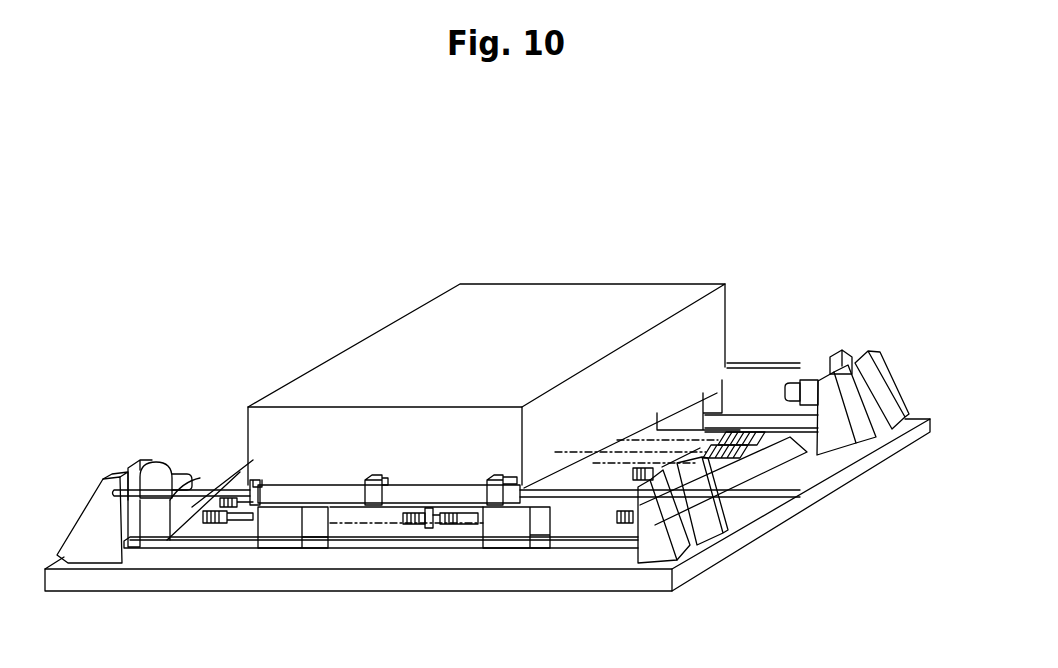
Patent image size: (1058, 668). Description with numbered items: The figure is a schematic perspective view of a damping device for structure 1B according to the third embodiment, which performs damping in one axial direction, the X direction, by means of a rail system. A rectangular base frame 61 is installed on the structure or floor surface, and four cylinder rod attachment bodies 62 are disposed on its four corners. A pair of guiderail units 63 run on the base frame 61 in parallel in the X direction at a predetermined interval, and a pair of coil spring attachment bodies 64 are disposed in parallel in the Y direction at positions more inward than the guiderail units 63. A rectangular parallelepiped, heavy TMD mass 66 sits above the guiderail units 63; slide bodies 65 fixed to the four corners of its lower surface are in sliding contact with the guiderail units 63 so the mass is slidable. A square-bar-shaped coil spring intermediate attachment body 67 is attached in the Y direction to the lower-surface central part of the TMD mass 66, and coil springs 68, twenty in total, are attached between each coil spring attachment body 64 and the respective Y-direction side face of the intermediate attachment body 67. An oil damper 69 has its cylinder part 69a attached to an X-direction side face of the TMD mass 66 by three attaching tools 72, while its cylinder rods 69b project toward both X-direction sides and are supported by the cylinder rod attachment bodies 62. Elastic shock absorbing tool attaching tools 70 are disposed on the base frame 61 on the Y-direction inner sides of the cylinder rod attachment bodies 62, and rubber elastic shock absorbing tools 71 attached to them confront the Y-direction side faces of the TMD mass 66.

The damping device for structure 1B is at (213, 306).
The base frame 61 is at (752, 537).
The cylinder rod attachment body 62 is at (85, 582).
The guiderail unit 63 is at (213, 545).
The coil spring attachment body 64 is at (180, 523).
The slide body 65 is at (503, 537).
The TMD mass 66 is at (512, 292).
The coil spring intermediate attachment body 67 is at (427, 522).
The coil spring 68 is at (625, 521).
The oil damper 69 is at (481, 469).
The cylinder part 69a is at (330, 500).
The cylinder rod 69b is at (150, 478).
The elastic shock absorbing tool attaching tool 70 is at (860, 418).
The elastic shock absorbing tool 71 is at (177, 478).
The attaching tool 72 is at (258, 480).